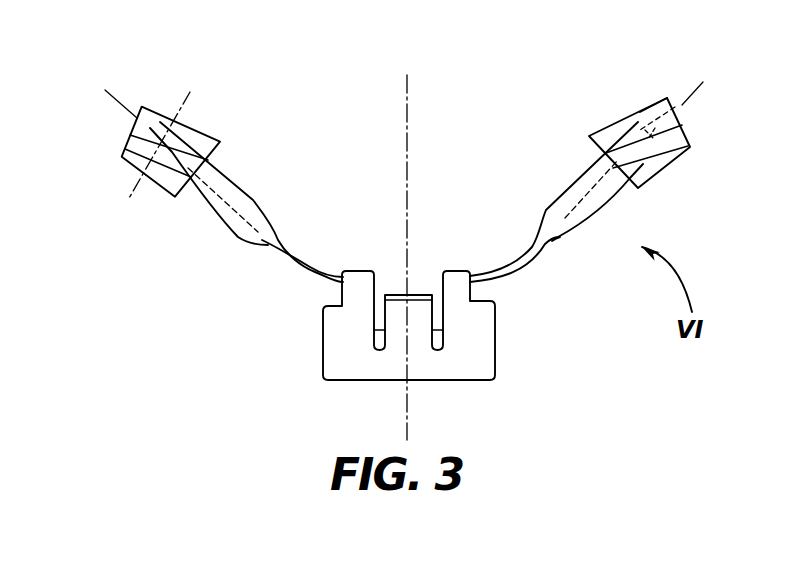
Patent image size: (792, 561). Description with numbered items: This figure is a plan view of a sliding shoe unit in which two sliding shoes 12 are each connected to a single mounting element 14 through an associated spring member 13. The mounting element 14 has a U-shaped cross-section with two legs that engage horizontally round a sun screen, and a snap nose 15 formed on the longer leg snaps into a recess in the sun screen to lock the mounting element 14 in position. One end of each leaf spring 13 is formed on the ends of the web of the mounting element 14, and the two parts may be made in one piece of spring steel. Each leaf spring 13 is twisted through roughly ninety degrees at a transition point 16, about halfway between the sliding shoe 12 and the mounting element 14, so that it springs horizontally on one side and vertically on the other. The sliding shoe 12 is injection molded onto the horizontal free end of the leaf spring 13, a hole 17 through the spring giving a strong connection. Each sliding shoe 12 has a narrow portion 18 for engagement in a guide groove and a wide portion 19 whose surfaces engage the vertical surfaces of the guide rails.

The sliding shoe 12 is at (130, 152).
The spring member 13 is at (218, 200).
The mounting element 14 is at (337, 355).
The snap nose 15 is at (408, 314).
The transition point 16 is at (557, 238).
The hole 17 is at (678, 108).
The narrow portion 18 is at (659, 101).
The wide portion 19 is at (690, 148).